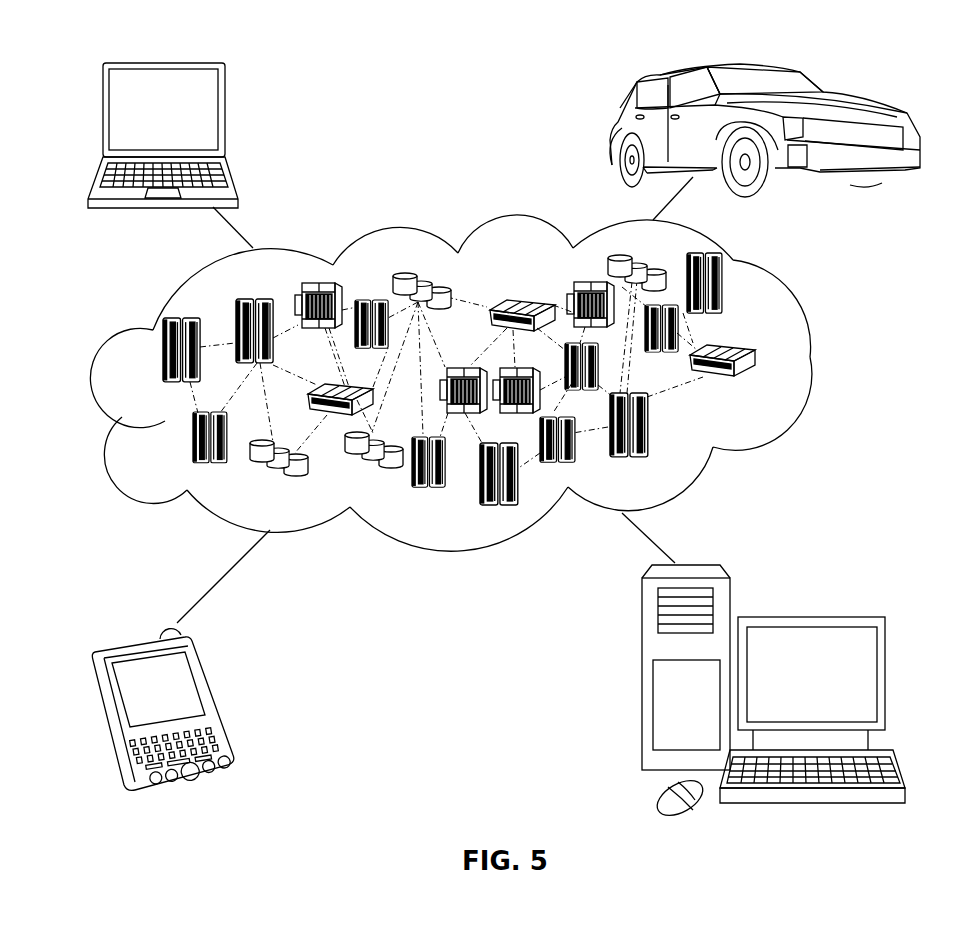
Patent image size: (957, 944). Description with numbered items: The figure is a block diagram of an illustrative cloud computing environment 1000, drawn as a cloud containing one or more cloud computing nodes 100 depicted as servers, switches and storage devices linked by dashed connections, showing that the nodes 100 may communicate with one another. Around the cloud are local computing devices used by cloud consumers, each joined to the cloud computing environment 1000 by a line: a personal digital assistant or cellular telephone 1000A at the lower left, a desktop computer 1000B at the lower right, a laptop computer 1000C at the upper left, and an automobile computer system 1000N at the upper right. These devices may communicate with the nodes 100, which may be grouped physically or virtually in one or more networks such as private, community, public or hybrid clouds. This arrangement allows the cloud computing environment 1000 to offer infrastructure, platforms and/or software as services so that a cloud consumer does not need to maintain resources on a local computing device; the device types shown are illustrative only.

The cloud computing nodes 100 is at (764, 390).
The cloud computing environment 1000 is at (812, 361).
The personal digital assistant (PDA) or cellular telephone 1000A is at (216, 700).
The desktop computer 1000B is at (808, 616).
The laptop computer 1000C is at (226, 117).
The automobile computer system 1000N is at (613, 131).